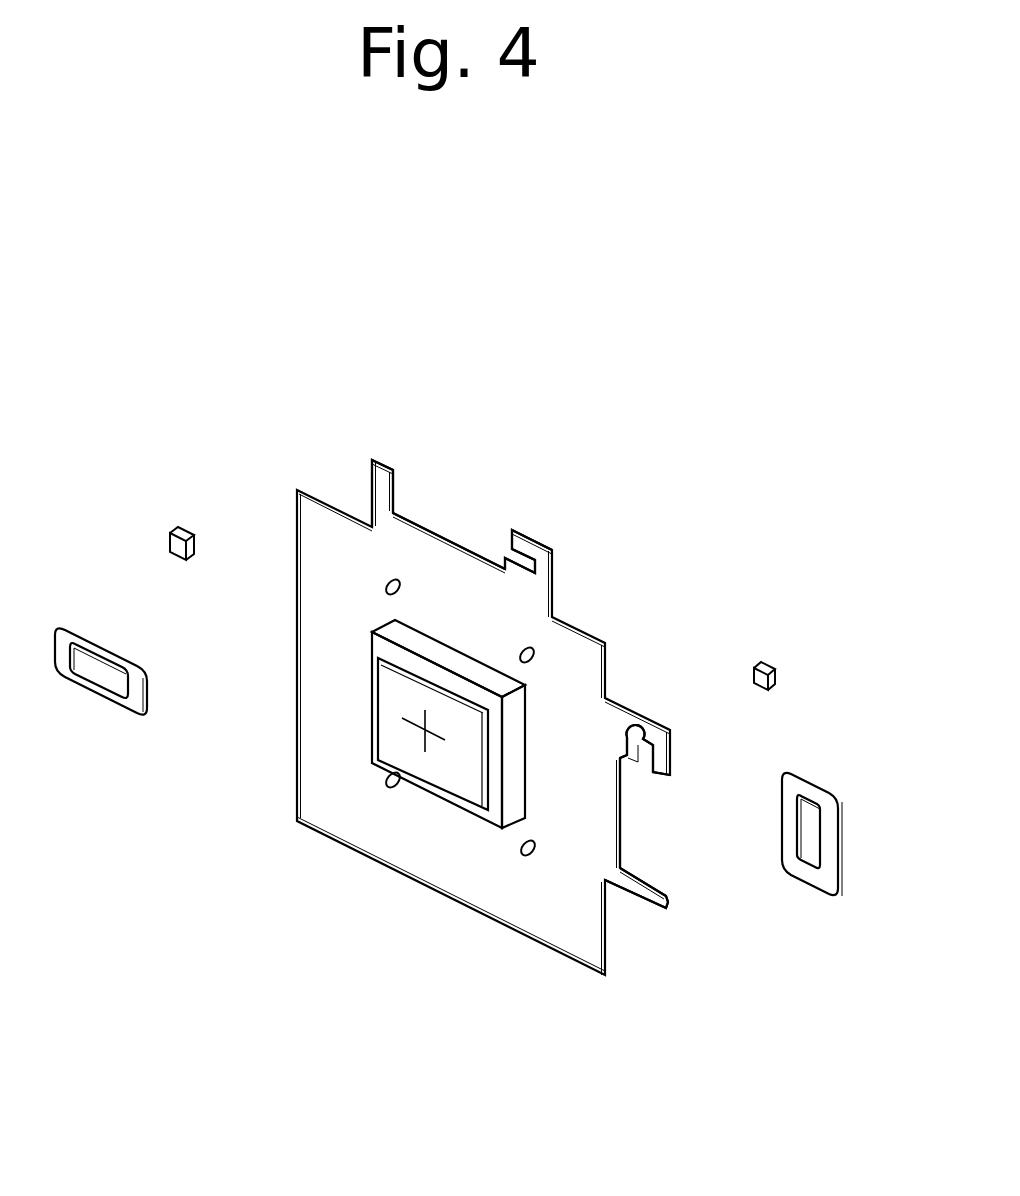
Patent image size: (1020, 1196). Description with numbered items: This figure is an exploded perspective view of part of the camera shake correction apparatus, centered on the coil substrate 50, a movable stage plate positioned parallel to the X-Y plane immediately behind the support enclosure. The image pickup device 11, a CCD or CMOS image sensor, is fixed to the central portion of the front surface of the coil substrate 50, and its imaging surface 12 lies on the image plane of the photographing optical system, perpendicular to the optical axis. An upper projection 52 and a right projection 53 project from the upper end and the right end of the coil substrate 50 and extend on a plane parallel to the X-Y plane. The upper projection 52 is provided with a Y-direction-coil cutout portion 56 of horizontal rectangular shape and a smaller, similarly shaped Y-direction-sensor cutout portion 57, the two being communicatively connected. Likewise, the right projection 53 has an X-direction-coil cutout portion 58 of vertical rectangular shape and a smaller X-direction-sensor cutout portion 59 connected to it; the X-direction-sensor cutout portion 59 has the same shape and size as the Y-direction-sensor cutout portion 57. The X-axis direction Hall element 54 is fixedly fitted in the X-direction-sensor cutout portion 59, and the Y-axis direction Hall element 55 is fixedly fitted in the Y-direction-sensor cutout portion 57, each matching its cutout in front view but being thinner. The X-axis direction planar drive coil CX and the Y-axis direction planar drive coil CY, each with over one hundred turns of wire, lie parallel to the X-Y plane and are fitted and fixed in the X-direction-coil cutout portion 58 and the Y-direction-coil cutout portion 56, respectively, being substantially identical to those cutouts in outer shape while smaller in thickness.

The image pickup device 11 is at (434, 805).
The imaging surface 12 is at (458, 770).
The coil substrate 50 is at (510, 900).
The upper projection 52 is at (378, 458).
The right projection 53 is at (665, 913).
The X-axis direction Hall element 54 is at (776, 664).
The Y-axis direction Hall element 55 is at (180, 525).
The Y-direction-coil cutout portion 56 is at (452, 548).
The Y-direction-sensor cutout portion 57 is at (543, 545).
The X-direction-coil cutout portion 58 is at (622, 802).
The X-direction-sensor cutout portion 59 is at (640, 717).
The X-axis direction planar drive coil CX is at (823, 842).
The Y-axis direction planar drive coil CY is at (92, 640).